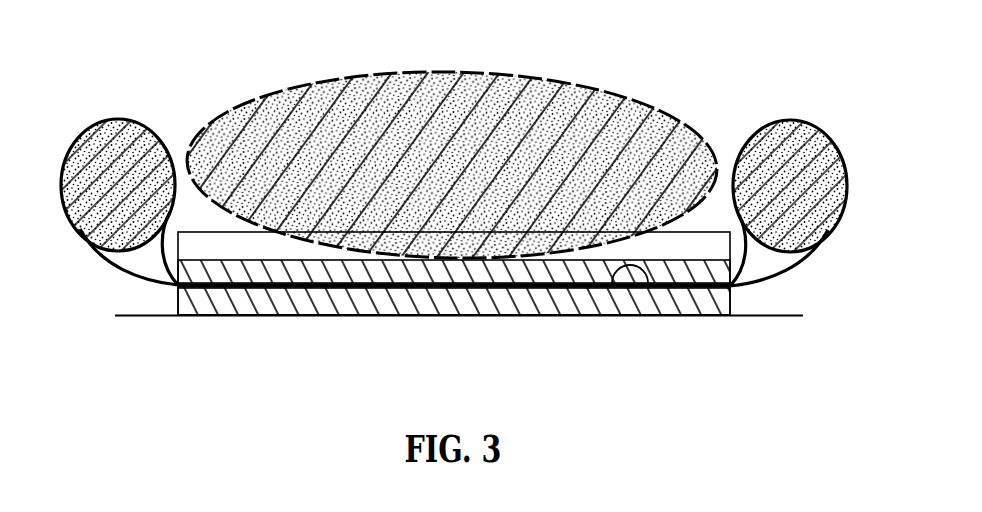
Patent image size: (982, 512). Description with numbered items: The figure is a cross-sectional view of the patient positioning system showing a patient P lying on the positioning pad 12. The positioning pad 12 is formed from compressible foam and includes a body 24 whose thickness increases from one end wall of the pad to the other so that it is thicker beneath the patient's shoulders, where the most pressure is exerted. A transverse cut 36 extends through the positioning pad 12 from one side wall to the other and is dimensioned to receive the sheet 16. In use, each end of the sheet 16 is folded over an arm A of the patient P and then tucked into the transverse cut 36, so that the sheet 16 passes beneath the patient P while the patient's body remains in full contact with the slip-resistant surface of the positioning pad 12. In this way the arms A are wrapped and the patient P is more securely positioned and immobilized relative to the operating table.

The positioning pad 12 is at (299, 322).
The body 24 is at (425, 316).
The transverse cut 36 is at (647, 285).
The sheet 16 is at (103, 248).
The arm A is at (90, 124).
The patient P is at (568, 108).